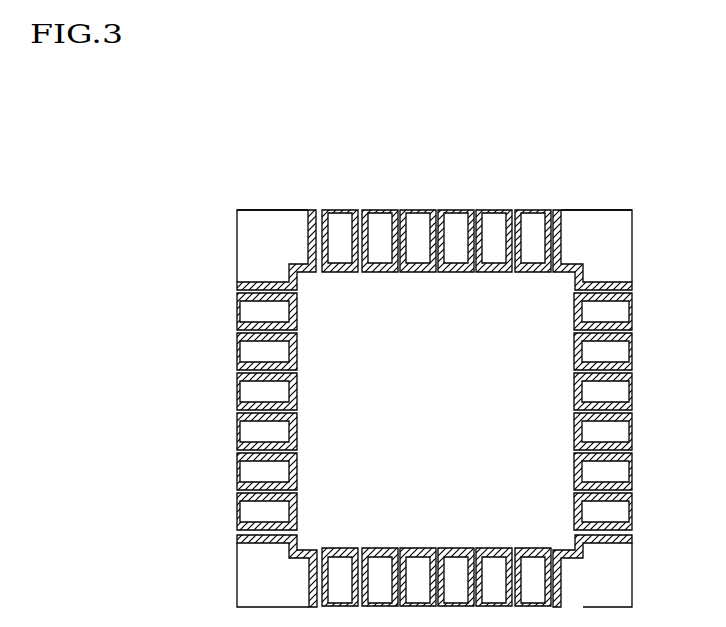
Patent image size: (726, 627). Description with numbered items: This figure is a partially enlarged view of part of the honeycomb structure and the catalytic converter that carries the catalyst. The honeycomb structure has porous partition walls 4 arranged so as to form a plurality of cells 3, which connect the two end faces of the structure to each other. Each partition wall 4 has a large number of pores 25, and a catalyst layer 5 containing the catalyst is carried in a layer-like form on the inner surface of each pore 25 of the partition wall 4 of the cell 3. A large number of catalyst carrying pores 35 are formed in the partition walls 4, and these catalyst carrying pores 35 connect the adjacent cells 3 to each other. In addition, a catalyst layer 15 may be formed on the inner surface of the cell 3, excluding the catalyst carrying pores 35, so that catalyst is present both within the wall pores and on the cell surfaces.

The cell 3 is at (552, 315).
The porous partition wall 4 is at (418, 232).
The catalyst layer 5 is at (612, 437).
The catalyst layer 15 is at (290, 357).
The catalyst carrying pore 35 is at (209, 446).
The pore 25 is at (255, 481).